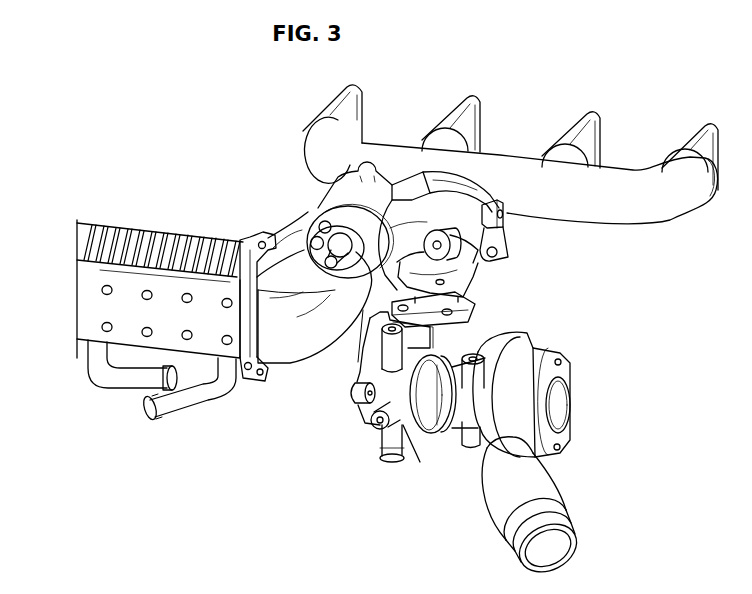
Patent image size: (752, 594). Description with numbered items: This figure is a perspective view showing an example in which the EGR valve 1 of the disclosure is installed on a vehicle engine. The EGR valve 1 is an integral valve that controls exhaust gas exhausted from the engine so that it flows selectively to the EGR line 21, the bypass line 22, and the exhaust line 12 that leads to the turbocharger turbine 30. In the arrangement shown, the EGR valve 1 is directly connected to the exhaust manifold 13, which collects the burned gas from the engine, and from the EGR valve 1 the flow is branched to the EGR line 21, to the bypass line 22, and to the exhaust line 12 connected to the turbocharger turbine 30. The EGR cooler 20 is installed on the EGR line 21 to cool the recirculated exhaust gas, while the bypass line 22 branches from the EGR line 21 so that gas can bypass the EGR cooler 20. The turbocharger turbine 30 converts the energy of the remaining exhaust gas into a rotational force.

The EGR valve 1 is at (520, 250).
The exhaust line 12 is at (473, 296).
The exhaust manifold 13 is at (623, 178).
The EGR cooler 20 is at (94, 296).
The EGR line 21 is at (292, 352).
The bypass line 22 is at (301, 232).
The turbocharger turbine 30 is at (409, 440).